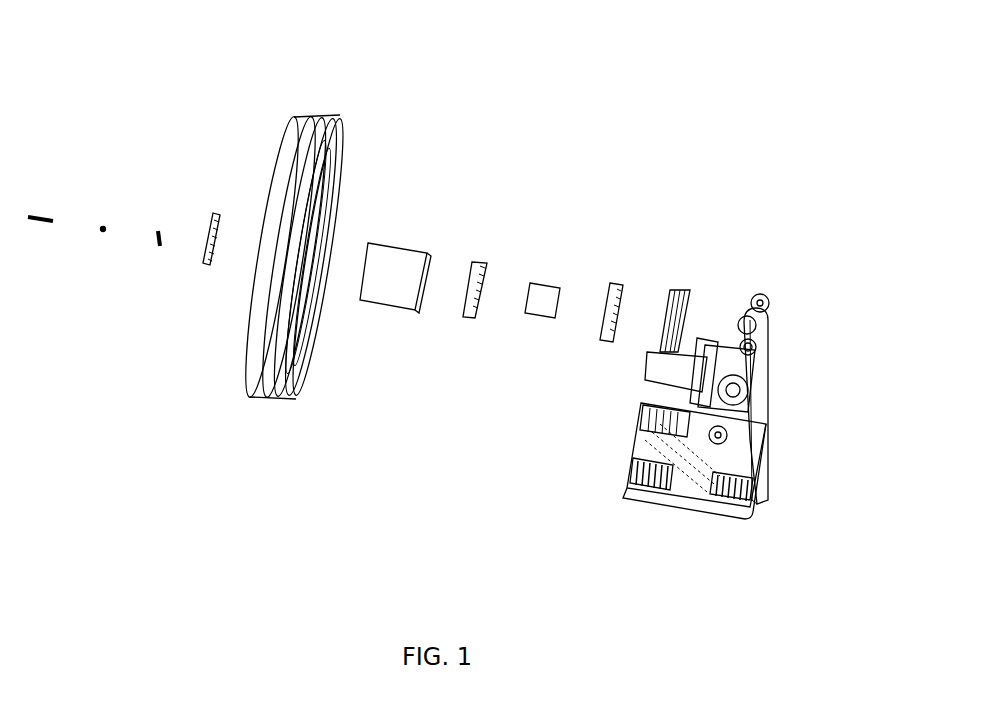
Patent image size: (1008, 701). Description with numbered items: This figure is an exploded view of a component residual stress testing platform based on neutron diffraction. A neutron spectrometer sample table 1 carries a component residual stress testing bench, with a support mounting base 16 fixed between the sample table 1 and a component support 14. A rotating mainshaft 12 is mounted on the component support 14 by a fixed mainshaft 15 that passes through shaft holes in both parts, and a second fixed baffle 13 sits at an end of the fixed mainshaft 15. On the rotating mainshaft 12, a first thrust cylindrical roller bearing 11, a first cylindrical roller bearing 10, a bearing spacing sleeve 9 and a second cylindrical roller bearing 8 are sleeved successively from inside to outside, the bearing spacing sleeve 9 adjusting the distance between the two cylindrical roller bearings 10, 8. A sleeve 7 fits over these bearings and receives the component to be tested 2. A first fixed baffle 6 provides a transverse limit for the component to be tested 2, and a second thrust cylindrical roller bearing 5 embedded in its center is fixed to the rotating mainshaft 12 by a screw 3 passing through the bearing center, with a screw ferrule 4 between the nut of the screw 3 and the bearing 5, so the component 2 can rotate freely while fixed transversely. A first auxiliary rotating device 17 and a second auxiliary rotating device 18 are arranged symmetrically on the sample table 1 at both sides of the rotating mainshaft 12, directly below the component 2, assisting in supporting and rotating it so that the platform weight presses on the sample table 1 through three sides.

The neutron spectrometer sample table 1 is at (683, 473).
The component to be tested 2 is at (260, 412).
The screw 3 is at (44, 228).
The screw ferrule 4 is at (103, 214).
The second thrust cylindrical roller bearing 5 is at (158, 252).
The first fixed baffle 6 is at (214, 206).
The sleeve 7 is at (390, 238).
The second cylindrical roller bearing 8 is at (478, 322).
The bearing spacing sleeve 9 is at (540, 275).
The first cylindrical roller bearing 10 is at (603, 349).
The first thrust cylindrical roller bearing 11 is at (676, 288).
The rotating mainshaft 12 is at (688, 372).
The second fixed baffle 13 is at (762, 294).
The component support 14 is at (749, 414).
The fixed mainshaft 15 is at (728, 428).
The support mounting base 16 is at (753, 502).
The first auxiliary rotating device 17 is at (647, 480).
The second auxiliary rotating device 18 is at (659, 430).